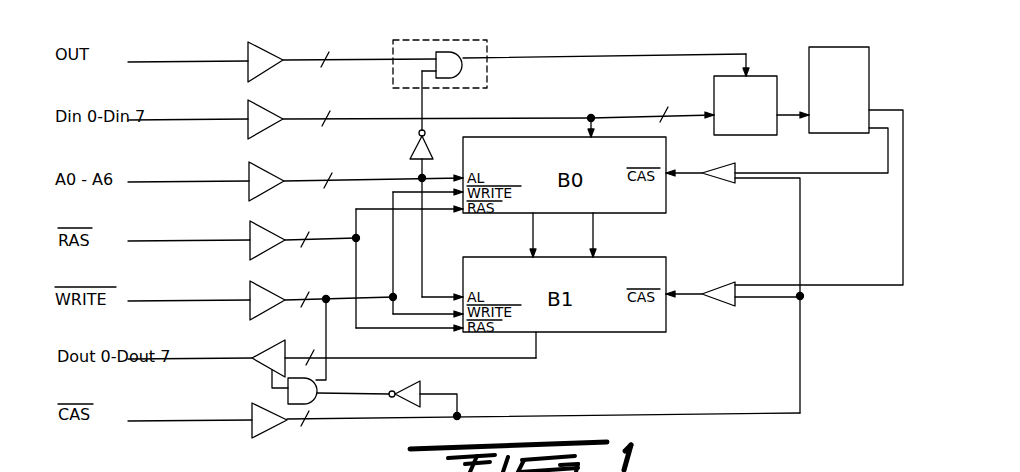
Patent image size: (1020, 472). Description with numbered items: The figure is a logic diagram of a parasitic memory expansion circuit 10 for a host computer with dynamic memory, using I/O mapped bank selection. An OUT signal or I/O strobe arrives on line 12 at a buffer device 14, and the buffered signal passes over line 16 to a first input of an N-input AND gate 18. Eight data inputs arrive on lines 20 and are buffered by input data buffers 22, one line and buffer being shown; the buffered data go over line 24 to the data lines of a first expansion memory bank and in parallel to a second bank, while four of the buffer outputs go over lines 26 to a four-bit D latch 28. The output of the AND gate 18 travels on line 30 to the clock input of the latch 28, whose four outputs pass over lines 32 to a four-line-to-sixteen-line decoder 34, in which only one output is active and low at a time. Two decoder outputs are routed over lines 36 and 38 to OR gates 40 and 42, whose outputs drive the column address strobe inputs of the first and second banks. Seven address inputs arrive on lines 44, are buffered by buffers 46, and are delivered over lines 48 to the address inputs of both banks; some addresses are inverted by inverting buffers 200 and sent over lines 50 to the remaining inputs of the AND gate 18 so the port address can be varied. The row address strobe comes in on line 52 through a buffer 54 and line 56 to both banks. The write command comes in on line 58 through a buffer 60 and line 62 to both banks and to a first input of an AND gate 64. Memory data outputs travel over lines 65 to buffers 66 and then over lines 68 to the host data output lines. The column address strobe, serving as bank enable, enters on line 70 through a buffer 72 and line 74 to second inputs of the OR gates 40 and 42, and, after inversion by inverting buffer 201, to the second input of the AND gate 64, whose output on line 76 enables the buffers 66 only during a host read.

The parasitic memory expansion circuit 10 is at (248, 33).
The line 12 is at (190, 62).
The buffer device 14 is at (266, 52).
The line 16 is at (352, 58).
The N-input AND gate 18 is at (470, 40).
The lines 20 is at (190, 120).
The input data buffers 22 is at (266, 111).
The line 24 is at (505, 118).
The lines 26 is at (610, 118).
The 4-bit D latch 28 is at (760, 76).
The line 30 is at (612, 54).
The lines 32 is at (790, 117).
The 4-line-to-16-line decoder 34 is at (869, 66).
The line 36 is at (840, 173).
The line 38 is at (898, 110).
The OR gate 40 is at (728, 183).
The OR gate 42 is at (726, 306).
The lines 44 is at (190, 182).
The buffers 46 is at (266, 173).
The lines 48 is at (365, 179).
The lines 50 is at (422, 105).
The line 52 is at (190, 241).
The buffer 54 is at (266, 232).
The line 56 is at (318, 244).
The line 58 is at (190, 301).
The buffer 60 is at (266, 292).
The line 62 is at (393, 252).
The AND gate 64 is at (320, 394).
The lines 65 is at (533, 233).
The buffers 66 is at (272, 345).
The lines 68 is at (215, 359).
The line 70 is at (192, 421).
The buffer 72 is at (266, 430).
The line 74 is at (354, 419).
The line 76 is at (270, 382).
The inverting buffers 200 is at (428, 146).
The inverting buffer 201 is at (414, 382).